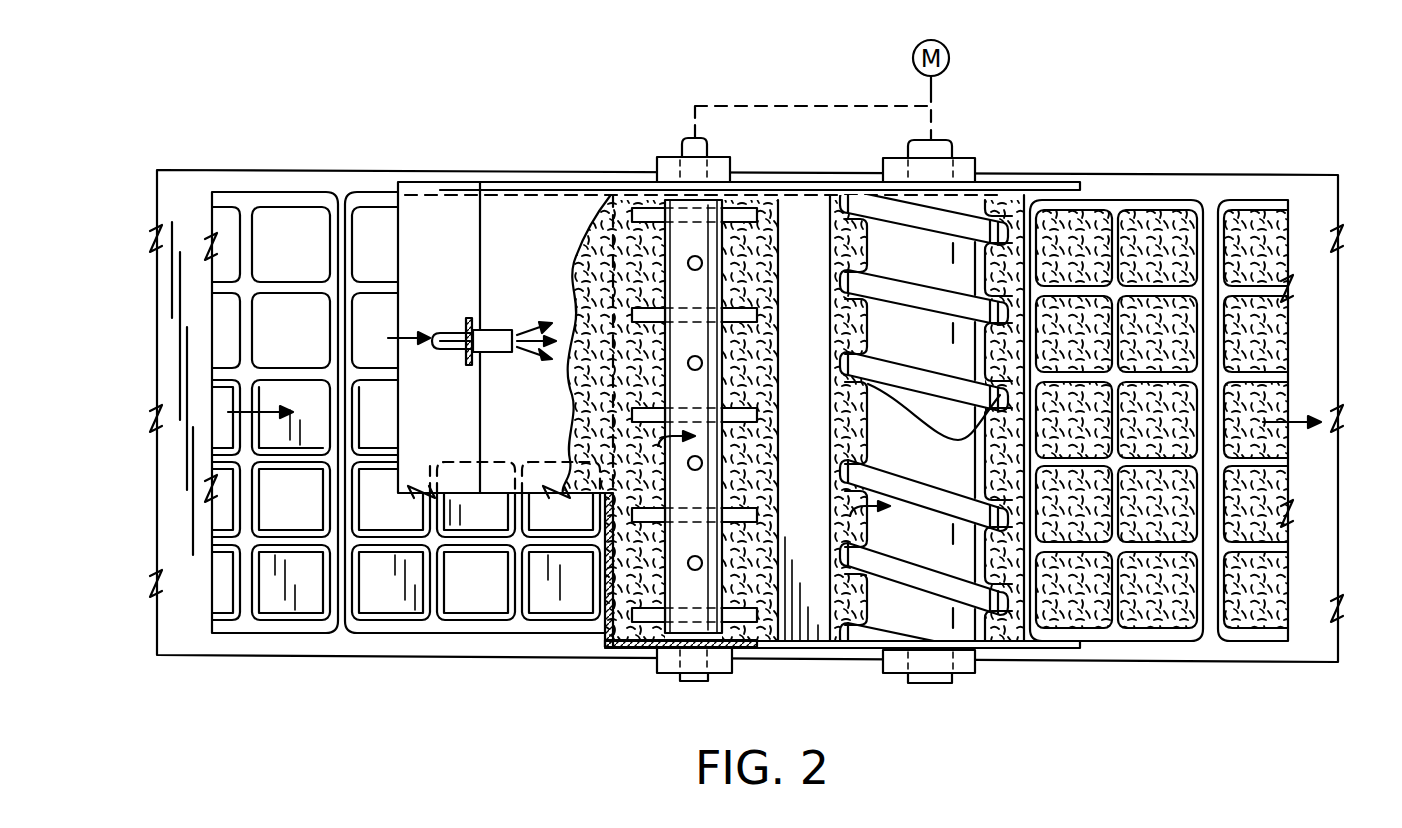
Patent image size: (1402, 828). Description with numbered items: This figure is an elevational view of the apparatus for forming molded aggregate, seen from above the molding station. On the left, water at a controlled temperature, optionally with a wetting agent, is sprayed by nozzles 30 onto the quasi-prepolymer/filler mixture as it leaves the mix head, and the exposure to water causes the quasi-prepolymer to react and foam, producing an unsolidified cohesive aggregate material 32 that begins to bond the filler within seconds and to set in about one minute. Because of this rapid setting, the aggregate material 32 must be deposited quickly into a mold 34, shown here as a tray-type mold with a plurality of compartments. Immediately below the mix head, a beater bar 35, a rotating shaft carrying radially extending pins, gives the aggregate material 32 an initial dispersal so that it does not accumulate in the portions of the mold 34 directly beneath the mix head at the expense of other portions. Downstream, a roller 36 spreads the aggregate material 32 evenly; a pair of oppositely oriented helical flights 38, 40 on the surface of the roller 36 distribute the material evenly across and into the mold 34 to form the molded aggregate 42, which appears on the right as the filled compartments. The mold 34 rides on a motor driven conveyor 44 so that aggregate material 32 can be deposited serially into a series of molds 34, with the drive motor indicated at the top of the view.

The nozzles 30 is at (495, 337).
The aggregate material 32 is at (702, 365).
The mold 34 is at (370, 227).
The beater bar 35 is at (713, 248).
The roller 36 is at (982, 647).
The helical flight 38 is at (957, 412).
The helical flight 40 is at (913, 543).
The molded aggregate 42 is at (1273, 338).
The motor driven conveyor 44 is at (177, 620).